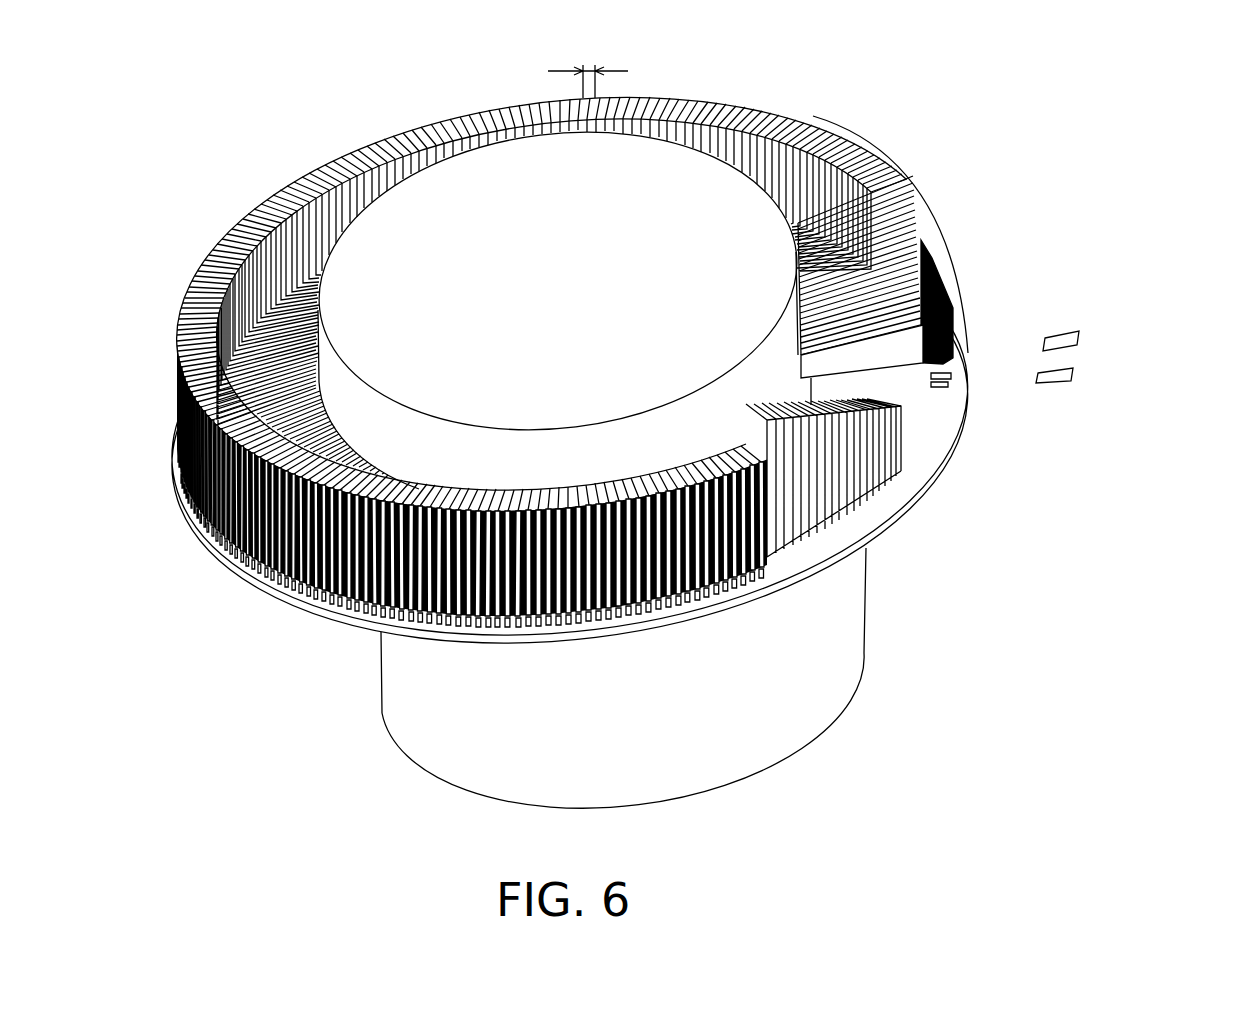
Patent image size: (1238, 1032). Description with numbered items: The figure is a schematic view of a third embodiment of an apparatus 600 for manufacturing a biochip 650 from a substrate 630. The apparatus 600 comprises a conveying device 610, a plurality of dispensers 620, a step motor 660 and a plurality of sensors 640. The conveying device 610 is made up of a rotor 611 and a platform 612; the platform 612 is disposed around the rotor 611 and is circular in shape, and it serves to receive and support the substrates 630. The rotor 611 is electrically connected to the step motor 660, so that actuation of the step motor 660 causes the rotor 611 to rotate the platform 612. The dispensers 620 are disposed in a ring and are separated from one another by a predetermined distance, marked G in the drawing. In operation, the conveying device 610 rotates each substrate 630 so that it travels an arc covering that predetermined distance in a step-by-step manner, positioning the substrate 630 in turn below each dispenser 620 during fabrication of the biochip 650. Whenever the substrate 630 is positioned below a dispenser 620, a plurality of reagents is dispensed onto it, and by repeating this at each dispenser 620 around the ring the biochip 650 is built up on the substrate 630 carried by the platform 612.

The apparatus 600 is at (202, 156).
The conveying device 610 is at (915, 433).
The rotor 611 is at (503, 240).
The platform 612 is at (921, 388).
The dispensers 620 is at (940, 363).
The substrate 630 is at (942, 363).
The sensors 640 is at (1065, 364).
The biochip 650 is at (885, 455).
The step motor 660 is at (804, 689).